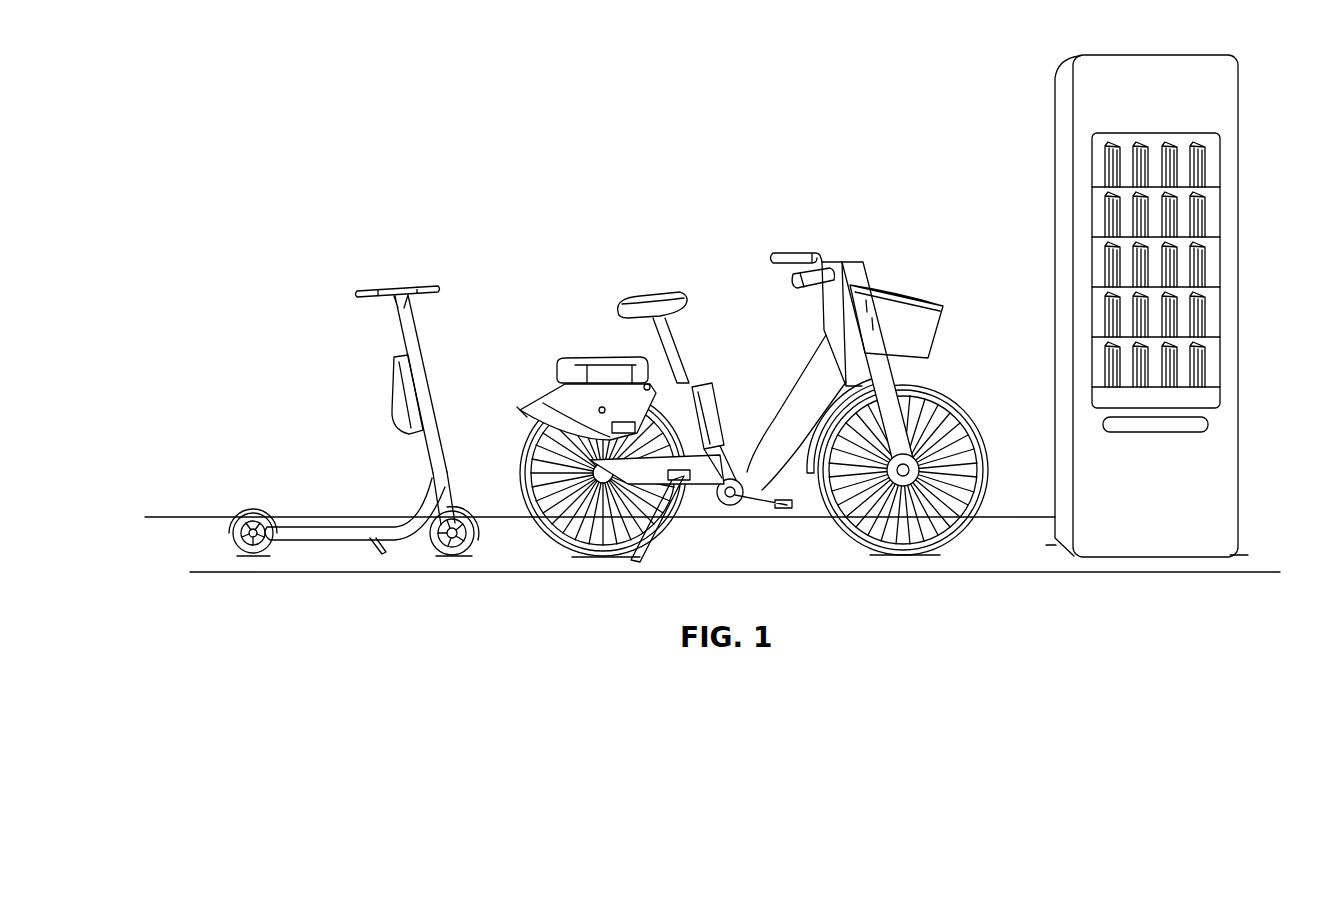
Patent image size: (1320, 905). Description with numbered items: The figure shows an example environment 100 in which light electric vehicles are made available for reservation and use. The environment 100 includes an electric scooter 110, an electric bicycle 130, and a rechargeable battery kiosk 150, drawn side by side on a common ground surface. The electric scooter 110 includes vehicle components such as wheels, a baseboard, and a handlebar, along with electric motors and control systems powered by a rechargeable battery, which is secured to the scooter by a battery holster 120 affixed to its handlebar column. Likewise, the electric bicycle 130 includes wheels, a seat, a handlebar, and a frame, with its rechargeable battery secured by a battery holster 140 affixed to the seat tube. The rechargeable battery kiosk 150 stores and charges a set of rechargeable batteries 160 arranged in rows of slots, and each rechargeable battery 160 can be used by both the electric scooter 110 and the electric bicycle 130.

The environment 100 is at (296, 52).
The electric scooter 110 is at (400, 331).
The battery holster 120 is at (392, 403).
The electric bicycle 130 is at (618, 313).
The battery holster 140 is at (702, 387).
The rechargeable battery kiosk 150 is at (1055, 100).
The rechargeable batteries 160 is at (1103, 213).